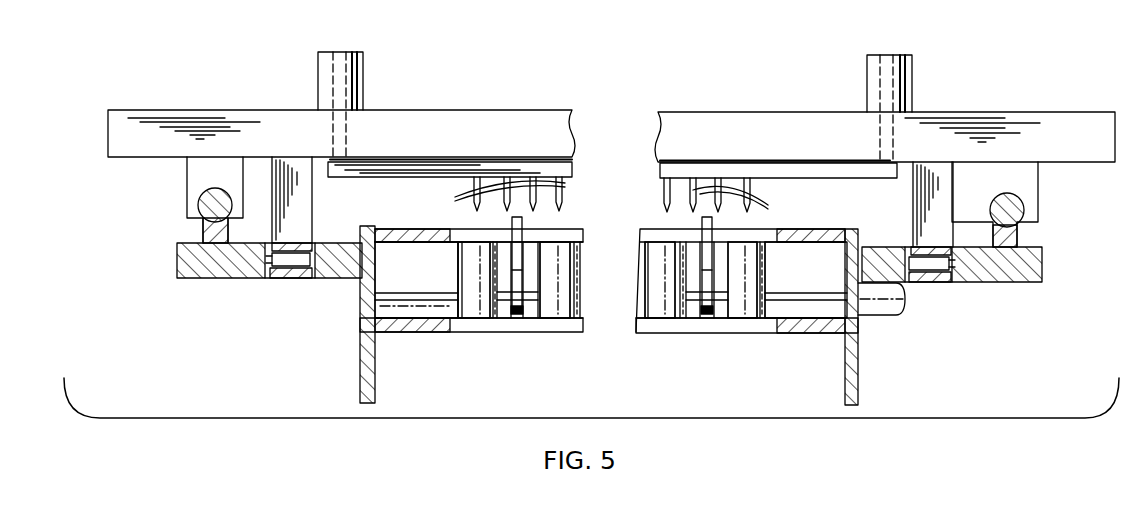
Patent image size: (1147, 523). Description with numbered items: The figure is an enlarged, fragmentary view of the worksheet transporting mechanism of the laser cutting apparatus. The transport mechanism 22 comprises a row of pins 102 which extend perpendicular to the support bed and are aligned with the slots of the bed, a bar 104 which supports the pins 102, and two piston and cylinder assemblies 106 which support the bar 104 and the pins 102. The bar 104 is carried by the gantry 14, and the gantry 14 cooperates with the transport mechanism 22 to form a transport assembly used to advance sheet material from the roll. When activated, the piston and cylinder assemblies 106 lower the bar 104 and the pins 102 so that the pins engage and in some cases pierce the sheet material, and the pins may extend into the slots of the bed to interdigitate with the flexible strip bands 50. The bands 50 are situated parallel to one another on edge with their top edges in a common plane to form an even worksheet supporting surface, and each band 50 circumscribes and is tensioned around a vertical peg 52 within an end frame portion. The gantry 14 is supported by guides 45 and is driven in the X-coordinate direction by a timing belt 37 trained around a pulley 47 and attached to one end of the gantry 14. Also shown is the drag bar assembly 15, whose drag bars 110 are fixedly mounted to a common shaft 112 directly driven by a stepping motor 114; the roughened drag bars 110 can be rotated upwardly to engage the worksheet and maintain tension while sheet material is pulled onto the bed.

The gantry 14 is at (737, 112).
The drag bar assembly 15 is at (517, 317).
The transport mechanism 22 is at (452, 156).
The timing belt 37 is at (298, 272).
The guides 45 is at (198, 203).
The pulley 47 is at (278, 250).
The flexible strip band 50 is at (457, 258).
The vertical peg 52 is at (470, 298).
The pins 102 is at (615, 201).
The bar 104 is at (358, 170).
The piston and cylinder assembly 106 is at (340, 52).
The drag bar 110 is at (523, 222).
The common shaft 112 is at (405, 300).
The stepping motor 114 is at (895, 313).